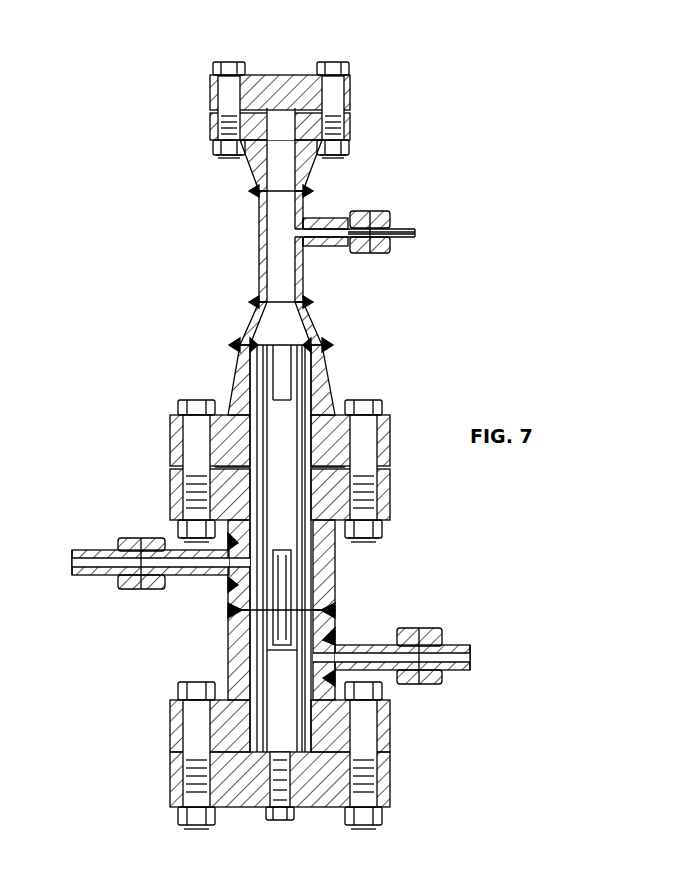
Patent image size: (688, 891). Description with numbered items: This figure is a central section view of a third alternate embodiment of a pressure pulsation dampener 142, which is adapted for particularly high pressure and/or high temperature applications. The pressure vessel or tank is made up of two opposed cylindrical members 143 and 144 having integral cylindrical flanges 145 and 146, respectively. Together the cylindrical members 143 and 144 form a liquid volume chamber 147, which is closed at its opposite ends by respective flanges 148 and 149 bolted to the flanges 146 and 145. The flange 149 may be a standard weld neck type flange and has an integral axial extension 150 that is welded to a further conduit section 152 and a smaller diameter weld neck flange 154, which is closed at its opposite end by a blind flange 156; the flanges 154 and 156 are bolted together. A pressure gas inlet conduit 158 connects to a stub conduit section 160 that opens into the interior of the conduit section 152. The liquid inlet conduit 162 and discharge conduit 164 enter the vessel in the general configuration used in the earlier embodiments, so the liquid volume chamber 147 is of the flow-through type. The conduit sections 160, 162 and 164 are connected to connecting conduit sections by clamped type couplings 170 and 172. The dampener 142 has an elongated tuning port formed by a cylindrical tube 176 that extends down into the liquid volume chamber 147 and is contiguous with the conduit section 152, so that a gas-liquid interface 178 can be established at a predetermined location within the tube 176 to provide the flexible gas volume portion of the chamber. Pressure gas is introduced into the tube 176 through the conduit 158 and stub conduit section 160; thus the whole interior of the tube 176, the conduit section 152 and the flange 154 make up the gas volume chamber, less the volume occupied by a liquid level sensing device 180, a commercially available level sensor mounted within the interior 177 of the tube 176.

The pulsation dampener 142 is at (344, 590).
The cylindrical member 143 is at (336, 565).
The cylindrical member 144 is at (342, 618).
The cylindrical flange 145 is at (392, 503).
The cylindrical flange 146 is at (392, 738).
The liquid volume chamber 147 is at (310, 716).
The flange 148 is at (340, 800).
The flange 149 is at (327, 376).
The axial extension 150 is at (239, 382).
The conduit section 152 is at (262, 257).
The weld neck flange 154 is at (256, 166).
The blind flange 156 is at (272, 78).
The pressure gas inlet conduit 158 is at (398, 228).
The stub conduit section 160 is at (318, 247).
The inlet conduit 162 is at (208, 579).
The discharge conduit 164 is at (387, 646).
The clamped type coupling 170 is at (147, 538).
The clamped type coupling 172 is at (358, 212).
The tube 176 is at (362, 483).
The interior 177 is at (294, 428).
The gas-liquid interface 178 is at (280, 648).
The liquid level sensing device 180 is at (294, 365).